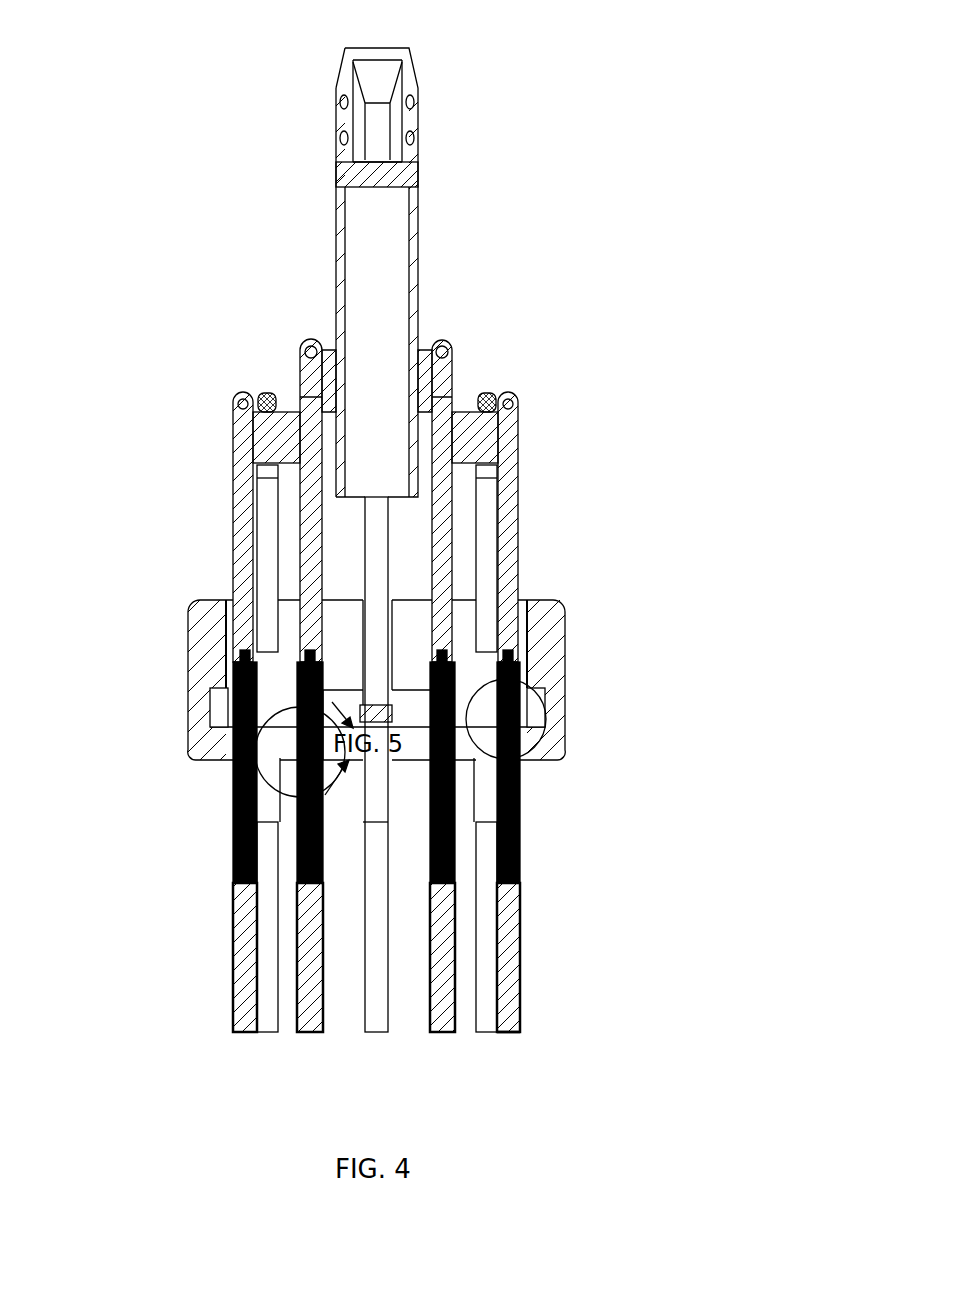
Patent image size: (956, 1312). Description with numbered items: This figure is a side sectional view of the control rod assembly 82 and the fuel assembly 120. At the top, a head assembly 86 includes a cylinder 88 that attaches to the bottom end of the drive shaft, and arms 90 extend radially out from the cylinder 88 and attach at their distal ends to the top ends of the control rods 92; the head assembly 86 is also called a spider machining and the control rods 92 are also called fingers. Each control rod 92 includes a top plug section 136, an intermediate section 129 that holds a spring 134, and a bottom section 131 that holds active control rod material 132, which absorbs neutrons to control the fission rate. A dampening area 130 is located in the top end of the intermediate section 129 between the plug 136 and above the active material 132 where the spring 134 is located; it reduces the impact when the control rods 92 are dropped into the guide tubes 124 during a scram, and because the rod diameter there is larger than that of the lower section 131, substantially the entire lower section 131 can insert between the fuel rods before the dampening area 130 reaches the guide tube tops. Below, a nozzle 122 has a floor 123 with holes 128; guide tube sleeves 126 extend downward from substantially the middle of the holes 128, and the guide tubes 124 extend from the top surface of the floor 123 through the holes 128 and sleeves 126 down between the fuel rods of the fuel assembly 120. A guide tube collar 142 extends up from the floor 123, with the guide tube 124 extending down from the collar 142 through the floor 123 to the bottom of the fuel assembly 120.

The control rod assembly 82 is at (96, 458).
The head assembly 86 is at (512, 305).
The cylinder 88 is at (343, 248).
The arms 90 is at (282, 423).
The control rods 92 is at (235, 522).
The fuel assembly 120 is at (82, 847).
The nozzle 122 is at (196, 676).
The floor 123 is at (212, 738).
The guide tubes 124 is at (646, 808).
The guide tube sleeves 126 is at (385, 800).
The holes 128 is at (232, 765).
The intermediate section 129 is at (522, 805).
The dampening area 130 is at (262, 822).
The bottom section 131 is at (522, 1013).
The active control rod material 132 is at (522, 940).
The spring 134 is at (522, 823).
The top plug section 136 is at (512, 557).
The guide tube collar 142 is at (392, 716).